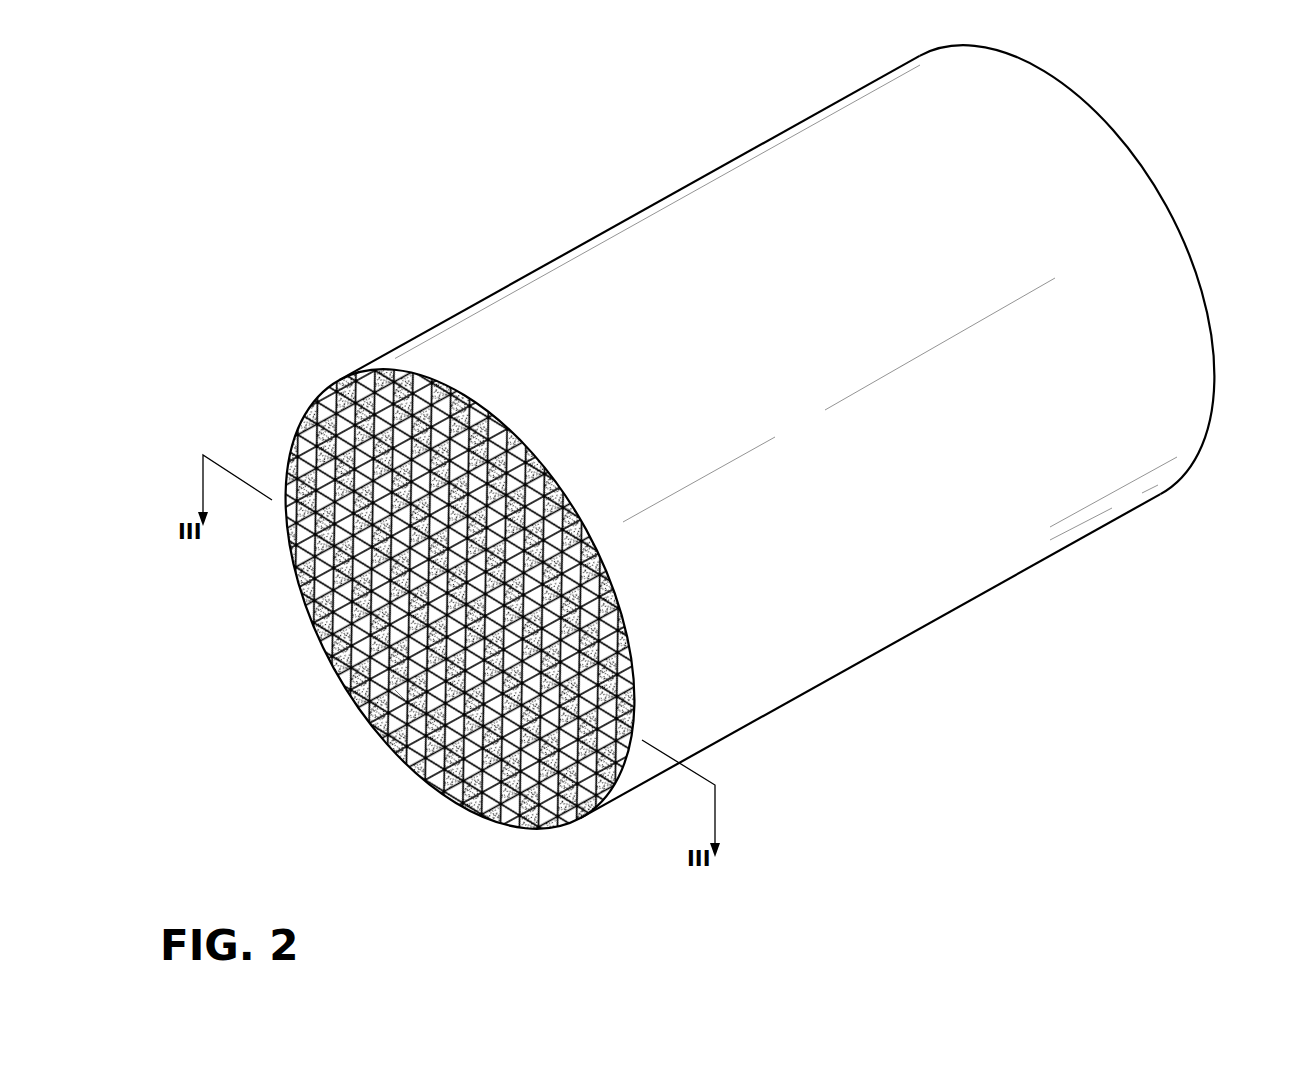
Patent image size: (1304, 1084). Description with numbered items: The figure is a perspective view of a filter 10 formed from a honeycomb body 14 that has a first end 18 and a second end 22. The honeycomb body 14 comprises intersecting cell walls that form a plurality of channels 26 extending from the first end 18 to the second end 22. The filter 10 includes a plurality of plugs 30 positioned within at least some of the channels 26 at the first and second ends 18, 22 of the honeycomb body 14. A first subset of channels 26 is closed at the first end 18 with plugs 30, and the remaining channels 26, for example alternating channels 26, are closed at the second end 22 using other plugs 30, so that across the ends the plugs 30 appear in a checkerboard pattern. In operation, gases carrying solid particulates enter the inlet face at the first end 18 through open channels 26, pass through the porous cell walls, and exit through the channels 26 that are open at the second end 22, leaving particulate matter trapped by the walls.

The filter 10 is at (745, 486).
The honeycomb body 14 is at (565, 297).
The first end 18 is at (459, 619).
The second end 22 is at (1192, 228).
The channels 26 is at (352, 667).
The plugs 30 is at (400, 700).